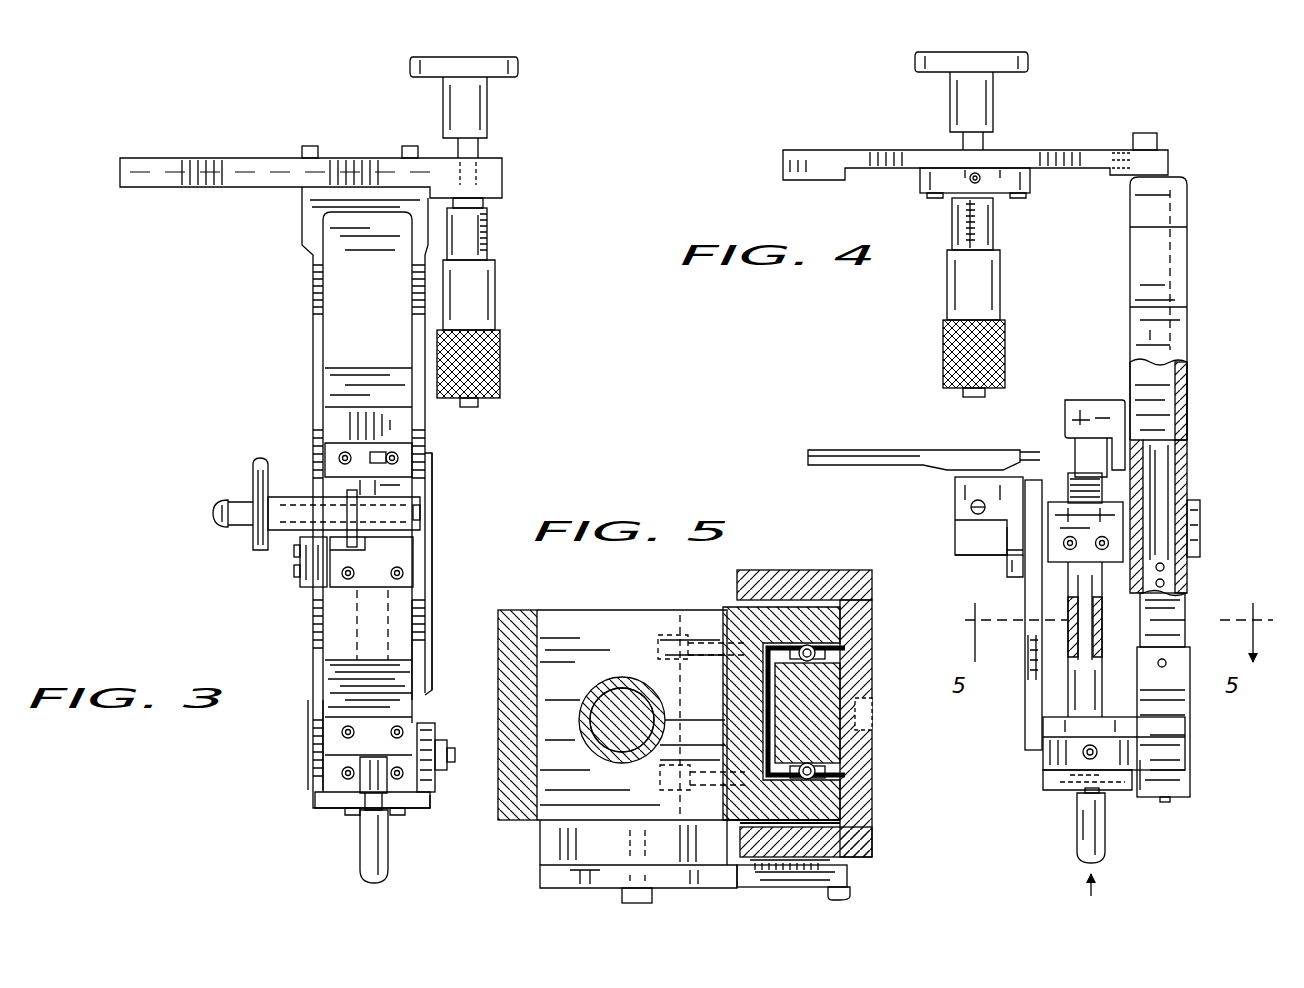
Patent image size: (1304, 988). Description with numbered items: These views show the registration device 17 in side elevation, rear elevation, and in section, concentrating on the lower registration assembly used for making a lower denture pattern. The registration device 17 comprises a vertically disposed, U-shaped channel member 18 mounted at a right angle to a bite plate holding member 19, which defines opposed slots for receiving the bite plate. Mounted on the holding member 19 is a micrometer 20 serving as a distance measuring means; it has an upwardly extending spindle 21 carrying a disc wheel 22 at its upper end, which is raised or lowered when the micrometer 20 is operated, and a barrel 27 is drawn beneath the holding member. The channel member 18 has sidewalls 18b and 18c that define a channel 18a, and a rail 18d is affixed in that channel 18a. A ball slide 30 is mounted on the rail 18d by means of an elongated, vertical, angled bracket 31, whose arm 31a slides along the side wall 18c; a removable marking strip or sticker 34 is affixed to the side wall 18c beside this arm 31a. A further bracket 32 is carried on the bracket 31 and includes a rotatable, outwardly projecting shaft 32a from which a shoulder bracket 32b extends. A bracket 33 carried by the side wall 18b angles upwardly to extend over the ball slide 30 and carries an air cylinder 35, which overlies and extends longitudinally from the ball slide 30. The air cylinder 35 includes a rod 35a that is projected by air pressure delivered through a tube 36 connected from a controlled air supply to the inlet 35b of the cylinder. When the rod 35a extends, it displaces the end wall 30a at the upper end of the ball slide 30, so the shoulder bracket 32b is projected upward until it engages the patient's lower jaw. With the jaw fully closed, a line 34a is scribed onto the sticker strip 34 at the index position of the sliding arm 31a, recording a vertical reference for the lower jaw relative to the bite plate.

In FIG. 3, the registration device 17 is at (296, 330).
In FIG. 5, the registration device 17 is at (875, 790).
In FIG. 4, the registration device 17 is at (1192, 260).
In FIG. 3, the channel member 18 is at (438, 606).
In FIG. 5, the channel member 18 is at (781, 713).
In FIG. 3, the channel 18a is at (402, 648).
In FIG. 5, the channel 18a is at (858, 728).
In FIG. 3, the sidewall 18b is at (312, 738).
In FIG. 5, the sidewall 18b is at (845, 840).
In FIG. 3, the side wall 18c is at (432, 562).
In FIG. 5, the side wall 18c is at (836, 572).
In FIG. 4, the side wall 18c is at (1162, 343).
In FIG. 5, the rail 18d is at (825, 695).
In FIG. 4, the rail 18d is at (1162, 492).
In FIG. 3, the bite plate holding member 19 is at (205, 158).
In FIG. 4, the bite plate holding member 19 is at (860, 150).
In FIG. 3, the micrometer 20 is at (492, 303).
In FIG. 4, the micrometer 20 is at (1000, 303).
In FIG. 3, the spindle 21 is at (480, 149).
In FIG. 4, the spindle 21 is at (985, 144).
In FIG. 3, the disc wheel 22 is at (518, 70).
In FIG. 4, the disc wheel 22 is at (1030, 62).
In FIG. 3, the micrometer barrel 27 is at (490, 238).
In FIG. 4, the micrometer barrel 27 is at (993, 238).
In FIG. 5, the ball slide 30 is at (740, 620).
In FIG. 4, the ball slide 30 is at (1130, 545).
In FIG. 4, the end wall 30a is at (1092, 398).
In FIG. 3, the bracket 31 is at (345, 660).
In FIG. 5, the bracket 31 is at (522, 822).
In FIG. 4, the bracket 31 is at (1030, 596).
In FIG. 3, the arm 31a is at (445, 772).
In FIG. 5, the arm 31a is at (850, 895).
In FIG. 4, the arm 31a is at (1180, 760).
In FIG. 3, the bracket 32 is at (395, 493).
In FIG. 4, the bracket 32 is at (963, 530).
In FIG. 3, the shaft 32a is at (226, 530).
In FIG. 4, the shaft 32a is at (970, 507).
In FIG. 3, the shoulder bracket 32b is at (253, 470).
In FIG. 4, the shoulder bracket 32b is at (868, 450).
In FIG. 3, the bracket 33 is at (300, 565).
In FIG. 4, the bracket 33 is at (1200, 515).
In FIG. 3, the marking strip 34 is at (432, 662).
In FIG. 5, the marking strip 34 is at (845, 865).
In FIG. 4, the marking strip 34 is at (1170, 655).
In FIG. 4, the line 34a is at (1162, 625).
In FIG. 3, the air cylinder 35 is at (345, 762).
In FIG. 5, the air cylinder 35 is at (622, 762).
In FIG. 4, the air cylinder 35 is at (1083, 678).
In FIG. 4, the rod 35a is at (1060, 455).
In FIG. 4, the inlet 35b is at (1083, 790).
In FIG. 3, the tube 36 is at (360, 848).
In FIG. 4, the tube 36 is at (1105, 846).